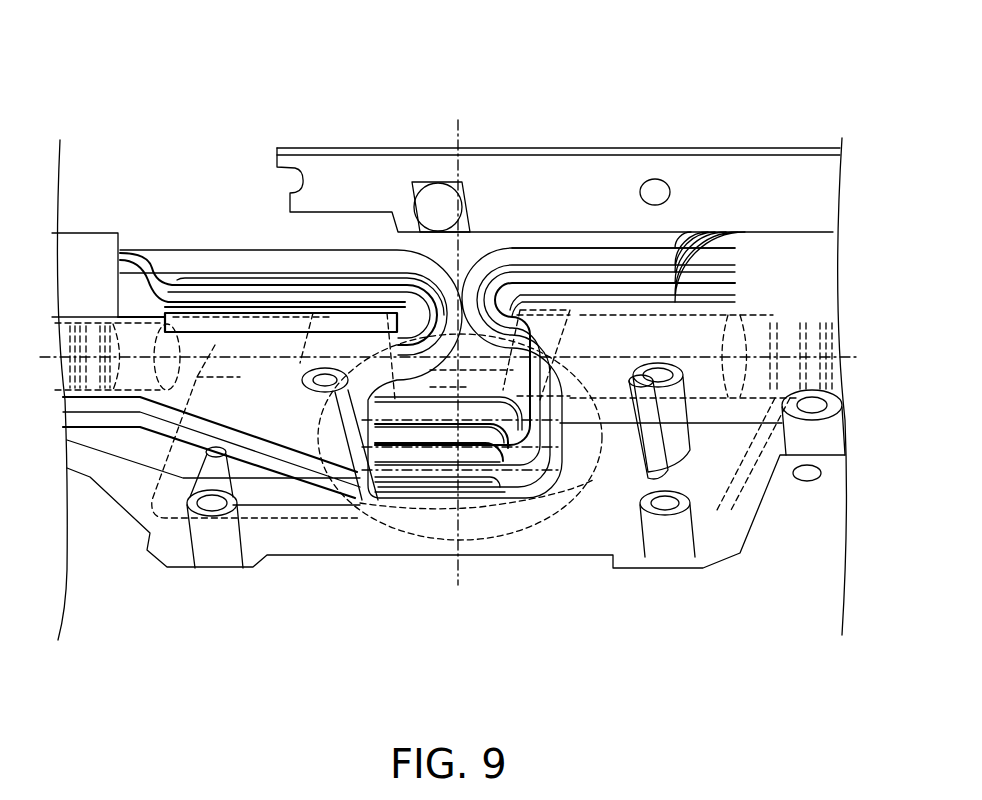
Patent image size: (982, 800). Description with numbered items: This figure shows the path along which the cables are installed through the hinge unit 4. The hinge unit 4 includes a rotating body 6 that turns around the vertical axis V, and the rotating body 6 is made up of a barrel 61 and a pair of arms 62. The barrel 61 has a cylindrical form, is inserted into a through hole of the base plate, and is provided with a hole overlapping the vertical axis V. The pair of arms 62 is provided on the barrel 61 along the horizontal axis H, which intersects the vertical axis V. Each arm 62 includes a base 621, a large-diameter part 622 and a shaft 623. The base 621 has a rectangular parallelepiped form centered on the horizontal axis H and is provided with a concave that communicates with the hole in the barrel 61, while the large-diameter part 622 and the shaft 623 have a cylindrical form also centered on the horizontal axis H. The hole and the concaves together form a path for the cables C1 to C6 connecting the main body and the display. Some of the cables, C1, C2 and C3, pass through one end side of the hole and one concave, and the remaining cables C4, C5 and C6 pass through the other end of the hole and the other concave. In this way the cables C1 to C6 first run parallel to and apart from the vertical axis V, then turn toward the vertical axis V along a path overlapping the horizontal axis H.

The arm 62 is at (360, 63).
The base 621 is at (553, 320).
The large-diameter part 622 is at (662, 313).
The shaft 623 is at (805, 320).
The cable C1 is at (510, 258).
The cable C2 is at (585, 280).
The cable C3 is at (617, 290).
The cable C4 is at (240, 262).
The cable C5 is at (205, 285).
The cable C6 is at (172, 262).
The vertical axis V is at (459, 341).
The horizontal axis H is at (461, 355).
The hinge unit 4 is at (405, 556).
The rotating body 6 is at (442, 541).
The barrel 61 is at (485, 528).